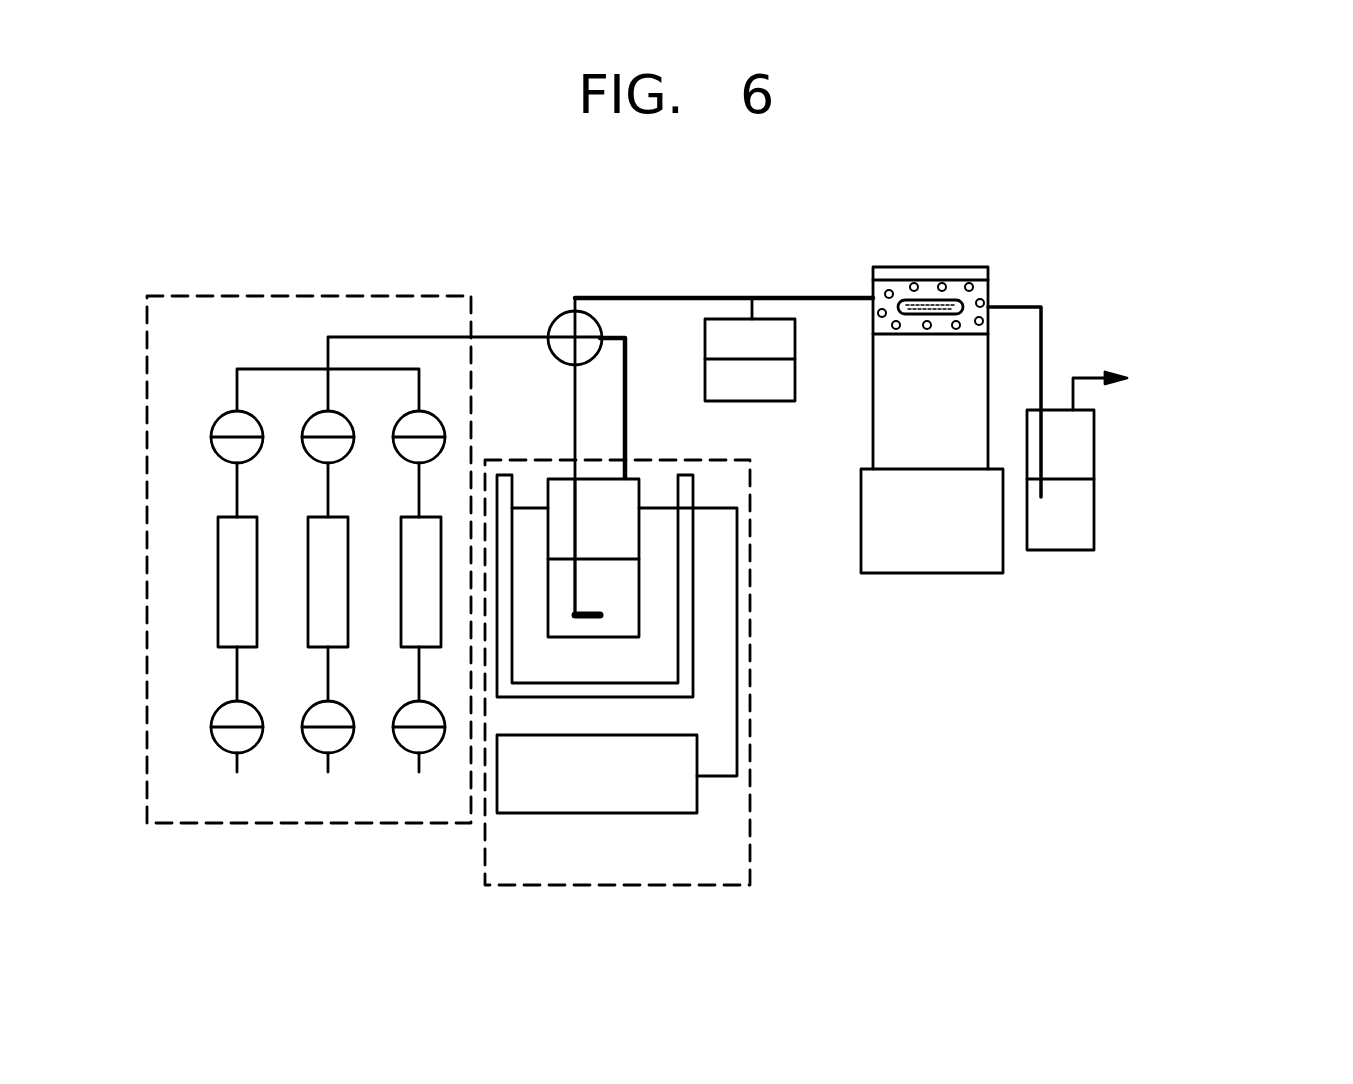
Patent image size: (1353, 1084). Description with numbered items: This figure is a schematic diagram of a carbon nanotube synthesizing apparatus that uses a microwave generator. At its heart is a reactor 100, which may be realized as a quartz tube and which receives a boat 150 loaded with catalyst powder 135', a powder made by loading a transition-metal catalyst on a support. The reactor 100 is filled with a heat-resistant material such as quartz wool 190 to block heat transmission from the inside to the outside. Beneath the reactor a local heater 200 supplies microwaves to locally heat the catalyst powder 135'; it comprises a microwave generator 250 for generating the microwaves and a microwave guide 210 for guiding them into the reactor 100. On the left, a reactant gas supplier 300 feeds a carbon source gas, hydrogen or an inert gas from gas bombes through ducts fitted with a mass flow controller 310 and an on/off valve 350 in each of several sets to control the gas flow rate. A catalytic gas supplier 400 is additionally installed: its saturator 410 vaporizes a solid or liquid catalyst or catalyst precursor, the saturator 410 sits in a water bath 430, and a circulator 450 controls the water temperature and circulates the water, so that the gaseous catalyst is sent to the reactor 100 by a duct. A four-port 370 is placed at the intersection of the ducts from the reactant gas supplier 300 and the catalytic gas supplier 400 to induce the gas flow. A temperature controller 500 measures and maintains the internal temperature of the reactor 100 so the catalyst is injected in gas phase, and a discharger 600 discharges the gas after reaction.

The reactor 100 is at (916, 290).
The catalyst powder 135' is at (966, 255).
The boat 150 is at (985, 300).
The quartz wool 190 is at (912, 282).
The local heater 200 is at (784, 412).
The microwave guide 210 is at (873, 422).
The microwave generator 250 is at (861, 490).
The reactant gas supplier 300 is at (339, 823).
The mass flow controller 310 is at (215, 556).
The on/off valve 350 is at (225, 408).
The four-port 370 is at (558, 312).
The catalytic gas supplier 400 is at (750, 835).
The saturator 410 is at (639, 625).
The water bath 430 is at (693, 672).
The circulator 450 is at (651, 793).
The temperature controller 500 is at (705, 385).
The discharger 600 is at (1072, 524).